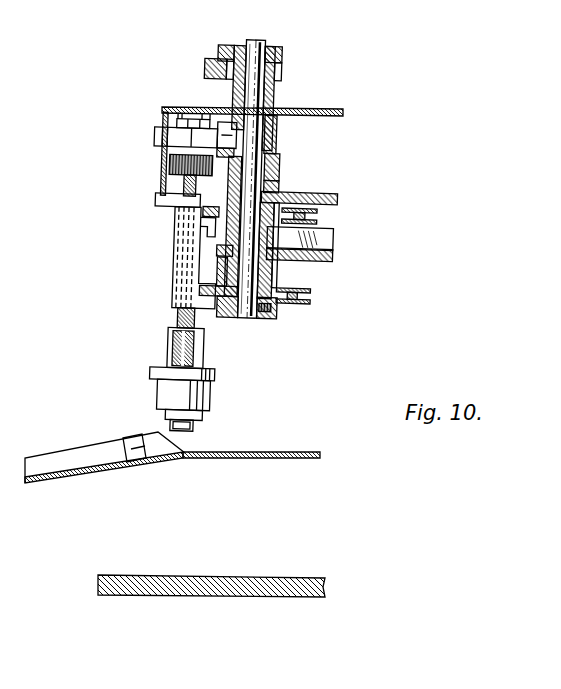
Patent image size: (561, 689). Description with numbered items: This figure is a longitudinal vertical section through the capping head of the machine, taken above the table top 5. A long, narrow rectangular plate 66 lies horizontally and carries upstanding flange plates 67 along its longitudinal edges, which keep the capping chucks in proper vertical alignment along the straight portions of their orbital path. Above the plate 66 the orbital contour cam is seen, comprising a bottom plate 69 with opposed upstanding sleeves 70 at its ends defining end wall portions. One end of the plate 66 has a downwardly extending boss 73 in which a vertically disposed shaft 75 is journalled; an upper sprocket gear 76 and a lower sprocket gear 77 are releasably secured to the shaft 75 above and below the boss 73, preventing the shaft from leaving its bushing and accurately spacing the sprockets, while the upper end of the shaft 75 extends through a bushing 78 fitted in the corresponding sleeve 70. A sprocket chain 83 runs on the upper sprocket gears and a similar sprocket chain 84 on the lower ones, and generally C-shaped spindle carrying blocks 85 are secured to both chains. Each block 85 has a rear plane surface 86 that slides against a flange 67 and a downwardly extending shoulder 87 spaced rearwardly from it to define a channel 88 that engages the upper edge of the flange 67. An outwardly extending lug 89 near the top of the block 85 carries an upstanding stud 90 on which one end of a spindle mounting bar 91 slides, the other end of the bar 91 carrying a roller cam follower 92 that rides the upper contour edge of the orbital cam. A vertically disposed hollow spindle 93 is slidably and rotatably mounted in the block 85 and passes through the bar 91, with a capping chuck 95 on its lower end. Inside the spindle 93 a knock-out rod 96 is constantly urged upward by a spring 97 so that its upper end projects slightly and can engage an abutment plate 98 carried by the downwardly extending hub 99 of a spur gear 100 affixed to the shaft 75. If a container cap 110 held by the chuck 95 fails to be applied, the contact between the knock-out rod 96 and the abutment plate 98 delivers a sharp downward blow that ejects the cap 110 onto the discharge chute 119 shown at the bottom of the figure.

The table top 5 is at (170, 575).
The rectangular plate 66 is at (332, 255).
The flange plate 67 is at (332, 238).
The bottom plate 69 is at (334, 192).
The sleeve 70 is at (282, 158).
The boss 73 is at (274, 273).
The shaft 75 is at (260, 135).
The upper sprocket gear 76 is at (218, 249).
The lower sprocket gear 77 is at (283, 308).
The bushing 78 is at (280, 182).
The sprocket chain 83 is at (318, 216).
The sprocket chain 84 is at (315, 297).
The spindle carrying block 85 is at (175, 243).
The rear plane surface 86 is at (200, 263).
The shoulder 87 is at (206, 216).
The channel 88 is at (207, 232).
The lug 89 is at (158, 203).
The stud 90 is at (165, 158).
The spindle mounting bar 91 is at (163, 135).
The roller cam follower 92 is at (225, 131).
The hollow spindle 93 is at (185, 182).
The capping chuck 95 is at (218, 391).
The knock-out rod 96 is at (183, 393).
The spring 97 is at (200, 352).
The abutment plate 98 is at (341, 108).
The hub 99 is at (268, 99).
The spur gear 100 is at (282, 65).
The container cap 110 is at (198, 428).
The discharge chute 119 is at (68, 475).